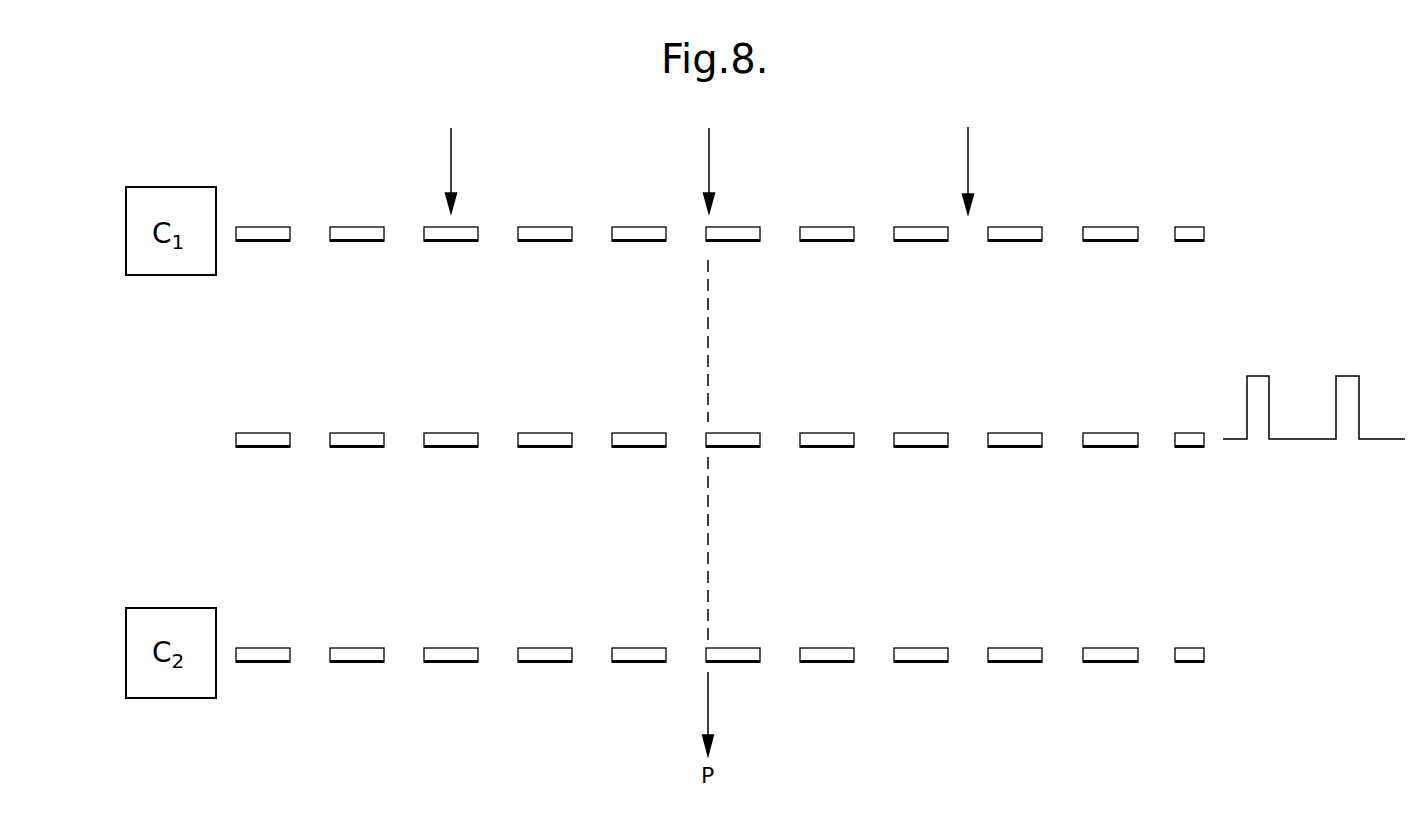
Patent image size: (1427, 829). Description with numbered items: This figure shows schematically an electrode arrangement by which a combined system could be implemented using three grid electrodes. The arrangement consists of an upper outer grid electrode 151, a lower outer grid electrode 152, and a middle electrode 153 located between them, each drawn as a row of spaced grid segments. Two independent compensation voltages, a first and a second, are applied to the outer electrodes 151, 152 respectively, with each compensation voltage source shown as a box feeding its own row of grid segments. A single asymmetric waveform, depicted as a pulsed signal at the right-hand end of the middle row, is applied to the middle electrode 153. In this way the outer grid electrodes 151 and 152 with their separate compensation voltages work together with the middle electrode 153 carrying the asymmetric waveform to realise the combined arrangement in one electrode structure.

The grid electrode 151 is at (1190, 227).
The grid electrode 152 is at (1188, 648).
The middle electrode 153 is at (1110, 433).